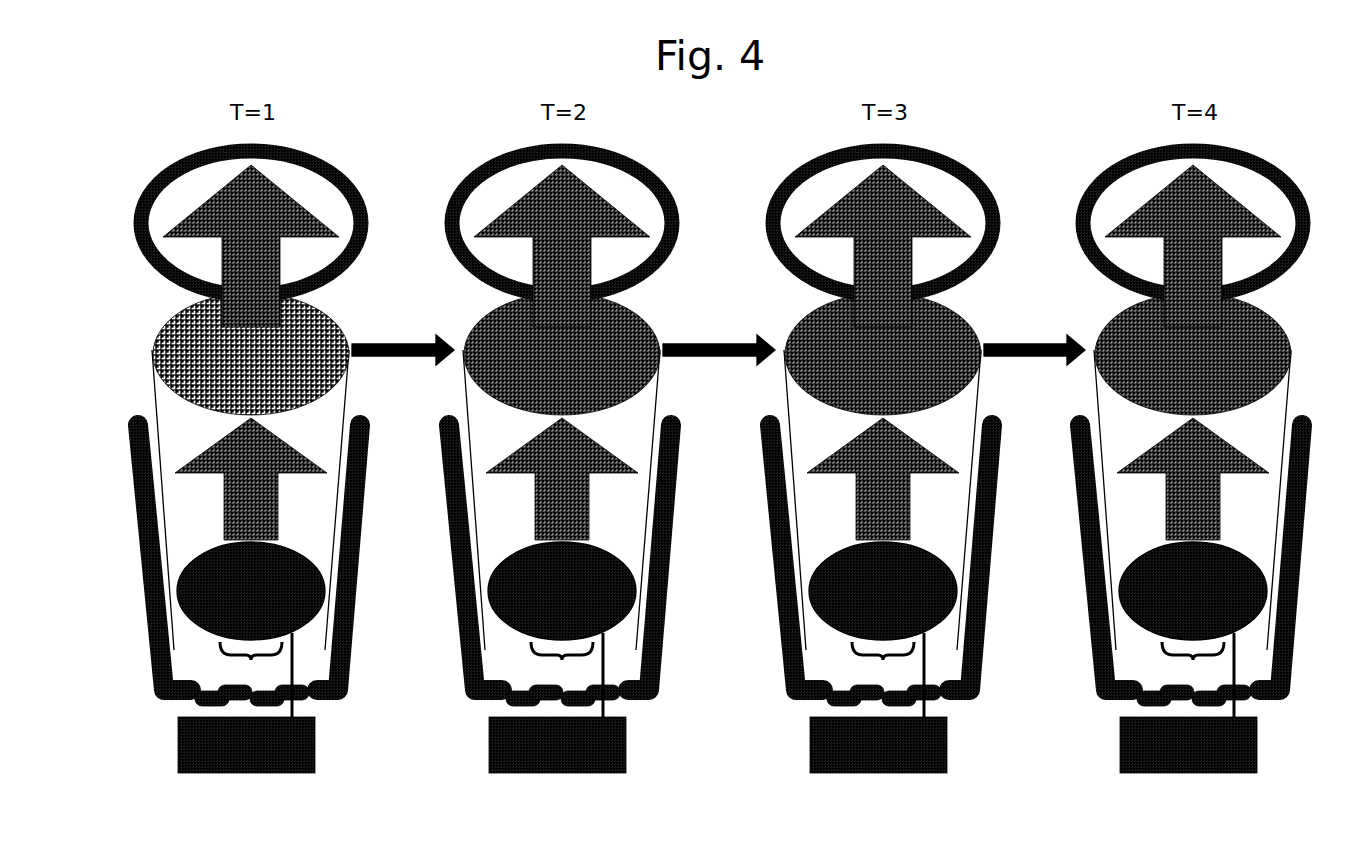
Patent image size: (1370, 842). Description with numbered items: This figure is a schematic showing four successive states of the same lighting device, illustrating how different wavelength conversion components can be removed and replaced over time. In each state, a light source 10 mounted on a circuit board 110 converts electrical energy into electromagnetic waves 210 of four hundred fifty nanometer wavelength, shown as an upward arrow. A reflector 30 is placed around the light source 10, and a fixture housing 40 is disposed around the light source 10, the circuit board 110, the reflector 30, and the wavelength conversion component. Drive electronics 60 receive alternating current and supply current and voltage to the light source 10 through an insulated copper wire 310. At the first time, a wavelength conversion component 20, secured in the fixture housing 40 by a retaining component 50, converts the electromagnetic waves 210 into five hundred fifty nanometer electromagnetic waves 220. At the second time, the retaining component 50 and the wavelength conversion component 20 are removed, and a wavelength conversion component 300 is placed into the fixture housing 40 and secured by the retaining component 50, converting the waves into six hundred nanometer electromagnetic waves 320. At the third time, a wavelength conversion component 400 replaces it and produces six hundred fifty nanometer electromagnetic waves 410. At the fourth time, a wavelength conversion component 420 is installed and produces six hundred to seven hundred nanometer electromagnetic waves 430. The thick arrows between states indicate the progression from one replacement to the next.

The light source 10 is at (722, 661).
The wavelength conversion component 20 is at (277, 354).
The reflector 30 is at (748, 500).
The fixture housing 40 is at (736, 565).
The retaining component 50 is at (733, 224).
The drive electronics 60 is at (717, 745).
The circuit board 110 is at (722, 602).
The electromagnetic waves 210 is at (725, 479).
The 550 nm wavelength electromagnetic waves 220 is at (251, 246).
The wavelength conversion component 300 is at (595, 354).
The insulated copper wire 310 is at (809, 682).
The 600 nm wavelength electromagnetic waves 320 is at (562, 246).
The wavelength conversion component 400 is at (916, 354).
The 650 nm wavelength electromagnetic waves 410 is at (883, 246).
The wavelength conversion component 420 is at (1226, 354).
The 600-700 nm wavelength electromagnetic waves 430 is at (1193, 246).